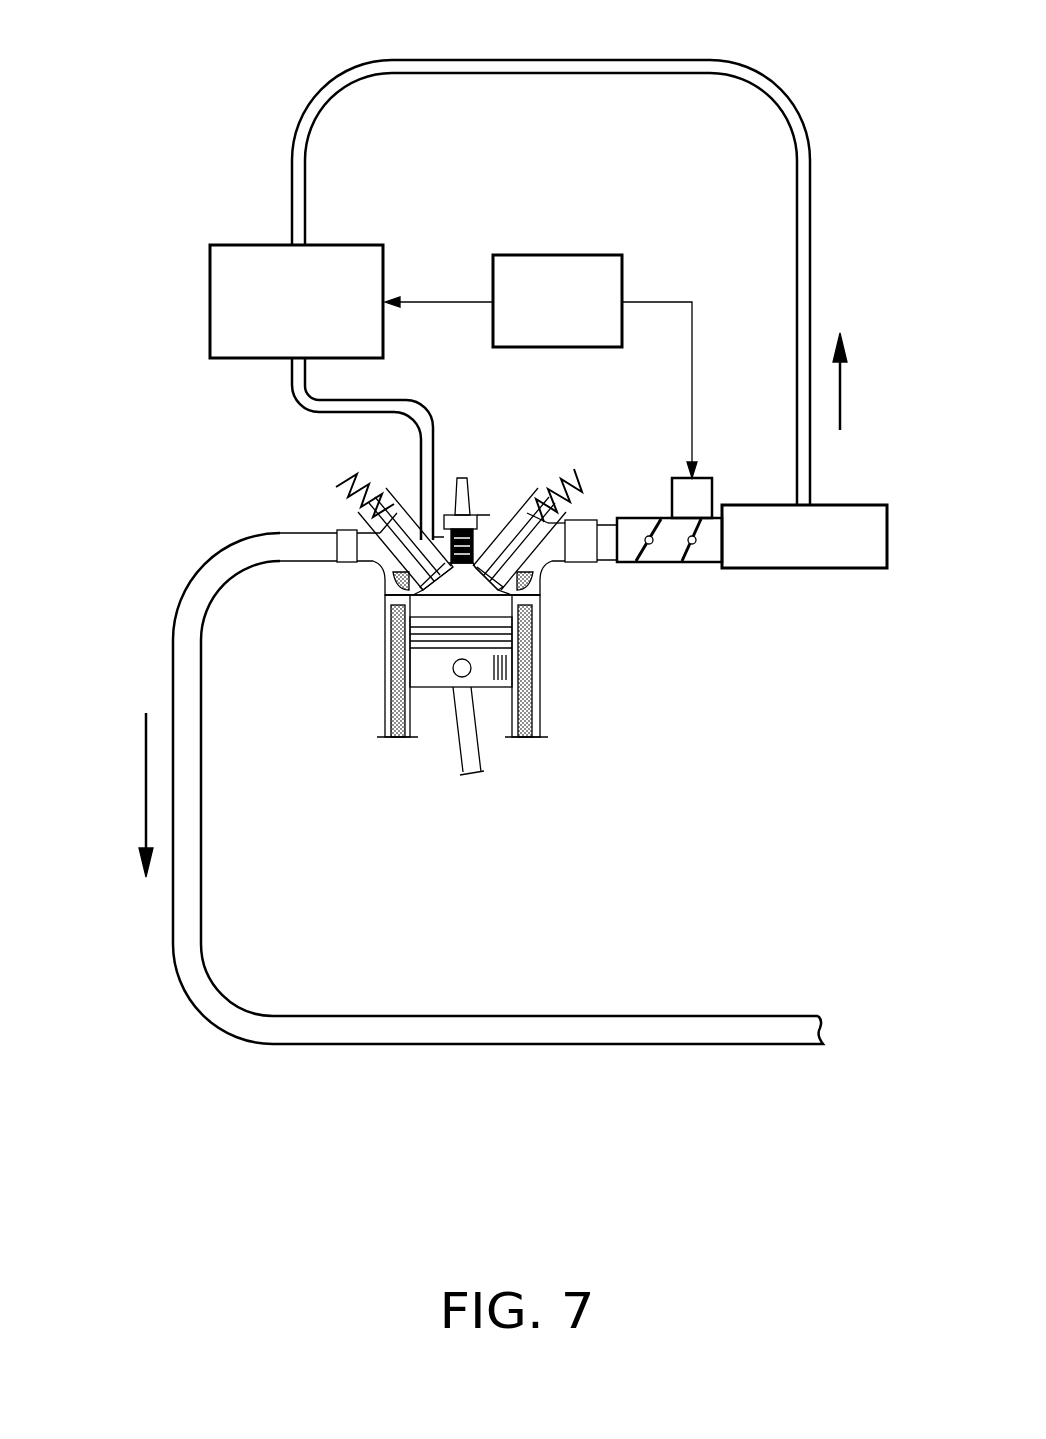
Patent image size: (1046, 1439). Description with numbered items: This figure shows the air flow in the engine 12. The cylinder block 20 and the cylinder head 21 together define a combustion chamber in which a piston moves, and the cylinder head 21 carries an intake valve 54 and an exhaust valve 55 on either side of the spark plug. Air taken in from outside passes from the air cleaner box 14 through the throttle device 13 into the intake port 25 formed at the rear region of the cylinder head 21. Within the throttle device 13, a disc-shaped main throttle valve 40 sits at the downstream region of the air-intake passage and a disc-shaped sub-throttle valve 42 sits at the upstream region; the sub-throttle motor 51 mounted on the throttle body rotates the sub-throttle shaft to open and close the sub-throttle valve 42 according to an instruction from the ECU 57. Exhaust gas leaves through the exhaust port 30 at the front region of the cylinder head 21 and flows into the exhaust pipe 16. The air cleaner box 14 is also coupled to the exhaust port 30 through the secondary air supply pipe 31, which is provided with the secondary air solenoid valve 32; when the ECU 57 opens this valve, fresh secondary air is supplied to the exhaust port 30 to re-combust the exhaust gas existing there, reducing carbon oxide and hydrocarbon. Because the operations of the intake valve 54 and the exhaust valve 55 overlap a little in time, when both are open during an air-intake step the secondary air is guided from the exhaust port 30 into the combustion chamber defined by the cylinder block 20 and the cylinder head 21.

The engine 12 is at (377, 690).
The throttle device 13 is at (675, 572).
The air cleaner box 14 is at (803, 568).
The exhaust pipe 16 is at (173, 922).
The cylinder block 20 is at (540, 700).
The cylinder head 21 is at (482, 497).
The intake port 25 is at (580, 568).
The exhaust port 30 is at (353, 570).
The secondary air supply pipe 31 is at (315, 92).
The secondary air solenoid valve 32 is at (210, 302).
The main throttle valve 40 is at (637, 562).
The sub-throttle valve 42 is at (697, 562).
The sub-throttle motor 51 is at (710, 478).
The intake valve 54 is at (510, 500).
The exhaust valve 55 is at (360, 523).
The ECU 57 is at (558, 255).